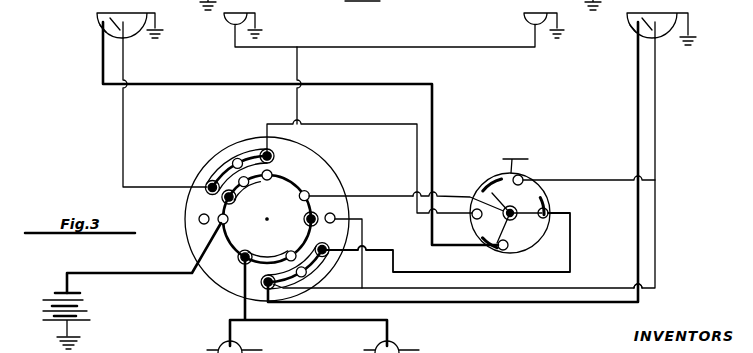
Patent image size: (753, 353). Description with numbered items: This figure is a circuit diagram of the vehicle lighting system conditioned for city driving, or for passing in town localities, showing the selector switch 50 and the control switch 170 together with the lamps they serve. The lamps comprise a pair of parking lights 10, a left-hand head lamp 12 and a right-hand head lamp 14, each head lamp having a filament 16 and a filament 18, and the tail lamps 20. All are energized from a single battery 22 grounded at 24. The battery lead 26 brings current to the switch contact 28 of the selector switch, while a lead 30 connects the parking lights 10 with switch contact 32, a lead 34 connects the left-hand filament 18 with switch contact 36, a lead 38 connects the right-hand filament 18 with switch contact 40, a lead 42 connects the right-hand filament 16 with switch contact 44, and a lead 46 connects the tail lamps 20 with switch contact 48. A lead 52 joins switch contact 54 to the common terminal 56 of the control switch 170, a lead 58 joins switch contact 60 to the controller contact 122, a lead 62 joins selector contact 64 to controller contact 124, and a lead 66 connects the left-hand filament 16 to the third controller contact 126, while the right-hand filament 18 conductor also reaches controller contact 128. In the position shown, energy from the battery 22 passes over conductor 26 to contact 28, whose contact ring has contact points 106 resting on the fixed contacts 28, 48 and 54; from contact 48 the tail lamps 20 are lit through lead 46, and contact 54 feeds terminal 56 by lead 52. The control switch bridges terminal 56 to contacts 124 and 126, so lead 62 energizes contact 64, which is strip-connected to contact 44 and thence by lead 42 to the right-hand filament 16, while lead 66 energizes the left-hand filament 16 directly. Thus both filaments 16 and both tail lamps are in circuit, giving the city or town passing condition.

The parking lights 10 is at (232, 27).
The head lamp 12 is at (142, 24).
The head lamp 14 is at (678, 16).
The filament 16 is at (100, 26).
The filament 18 is at (119, 30).
The tail lamps 20 is at (242, 349).
The battery 22 is at (86, 305).
The ground 24 is at (78, 340).
The battery lead 26 is at (158, 273).
The switch contact 28 is at (228, 219).
The lead 30 is at (299, 66).
The switch contact 32 is at (234, 198).
The lead 34 is at (123, 134).
The switch contact 36 is at (199, 217).
The lead 38 is at (655, 106).
The switch contact 40 is at (334, 216).
The lead 42 is at (638, 100).
The switch contact 44 is at (451, 285).
The lead 46 is at (243, 316).
The switch contact 48 is at (250, 255).
The selector switch 50 is at (322, 165).
The lead 52 is at (379, 196).
The switch contact 54 is at (307, 194).
The common terminal 56 is at (514, 221).
The lead 58 is at (371, 124).
The switch contact 60 is at (250, 145).
The lead 62 is at (394, 249).
The switch contact 64 is at (325, 263).
The lead 66 is at (240, 84).
The contact points 106 is at (270, 230).
The switch contact 122 is at (475, 219).
The switch contact 124 is at (570, 213).
The switch contact 126 is at (503, 250).
The switch contact 128 is at (524, 180).
The control switch 170 is at (518, 157).